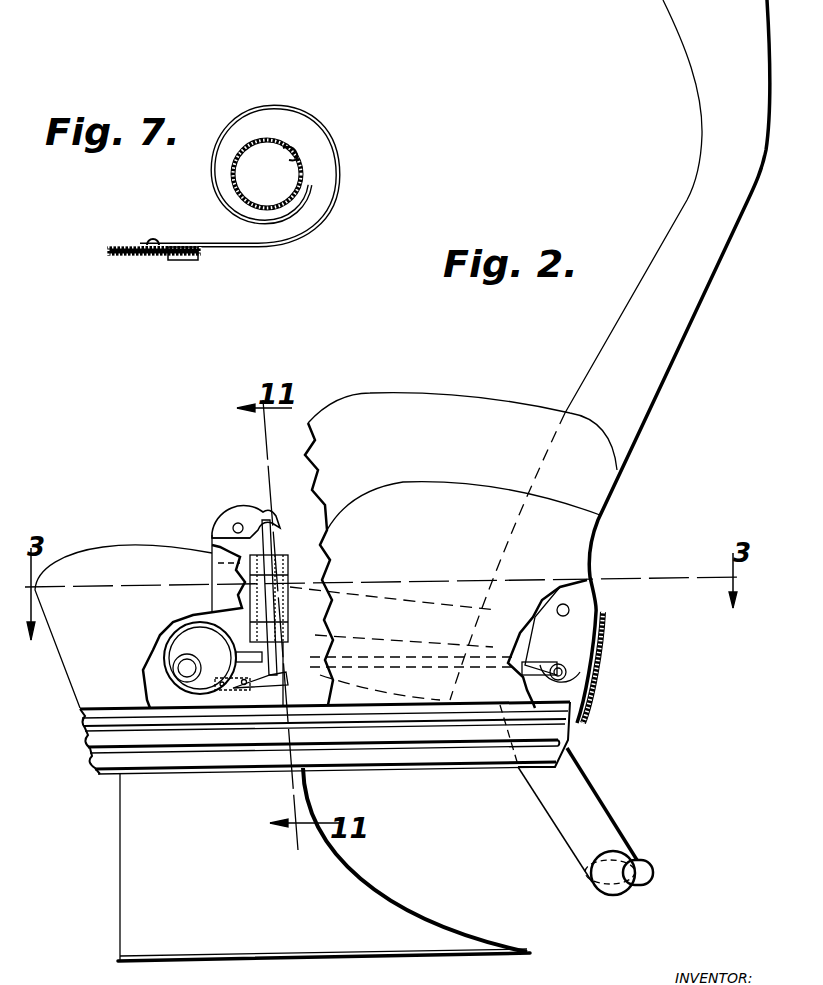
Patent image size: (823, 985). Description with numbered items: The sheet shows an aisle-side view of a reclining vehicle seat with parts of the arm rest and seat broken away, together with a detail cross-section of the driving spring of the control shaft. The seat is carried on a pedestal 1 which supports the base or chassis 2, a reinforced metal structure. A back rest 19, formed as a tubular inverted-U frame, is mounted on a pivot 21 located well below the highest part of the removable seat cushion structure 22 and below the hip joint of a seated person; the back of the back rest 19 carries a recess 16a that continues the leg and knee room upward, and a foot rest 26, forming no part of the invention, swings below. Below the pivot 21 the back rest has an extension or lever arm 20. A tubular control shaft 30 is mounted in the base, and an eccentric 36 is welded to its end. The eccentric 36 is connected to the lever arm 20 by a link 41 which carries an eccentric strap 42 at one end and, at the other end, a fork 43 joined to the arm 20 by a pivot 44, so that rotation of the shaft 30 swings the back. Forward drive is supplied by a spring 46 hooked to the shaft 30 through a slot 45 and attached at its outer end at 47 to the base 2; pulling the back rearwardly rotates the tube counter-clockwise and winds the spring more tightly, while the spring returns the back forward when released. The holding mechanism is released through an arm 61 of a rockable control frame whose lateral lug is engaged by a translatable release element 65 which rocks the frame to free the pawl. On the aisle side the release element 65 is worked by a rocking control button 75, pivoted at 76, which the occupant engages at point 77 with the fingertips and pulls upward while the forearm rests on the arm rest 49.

In FIG. 2, the pedestal 1 is at (352, 887).
In FIG. 2, the base or chassis 2 is at (397, 770).
In FIG. 2, the back rest 19 is at (687, 247).
In FIG. 2, the extension or lever arm 20 is at (573, 653).
In FIG. 2, the pivot 21 is at (570, 603).
In FIG. 2, the removable seat cushion structure 22 is at (152, 560).
In FIG. 2, the foot rest 26 is at (603, 800).
In FIG. 2, the shaft 30 is at (183, 688).
In FIG. 2, the eccentric 36 is at (163, 623).
In FIG. 2, the link 41 is at (387, 665).
In FIG. 2, the eccentric strap 42 is at (153, 650).
In FIG. 2, the fork 43 is at (530, 670).
In FIG. 2, the pivot 44 is at (567, 683).
In FIG. 7, the slot 45 is at (276, 140).
In FIG. 7, the spring 46 is at (323, 195).
In FIG. 7, the spring attachment to base 47 is at (153, 240).
In FIG. 2, the arm rest 49 is at (410, 400).
In FIG. 2, the arm of frame 61 is at (270, 682).
In FIG. 2, the translatable release element 65 is at (283, 566).
In FIG. 2, the recess 16a is at (580, 562).
In FIG. 2, the rocking control button 75 is at (240, 512).
In FIG. 2, the pivot of control button 76 is at (233, 527).
In FIG. 2, the engagement point 77 is at (214, 527).